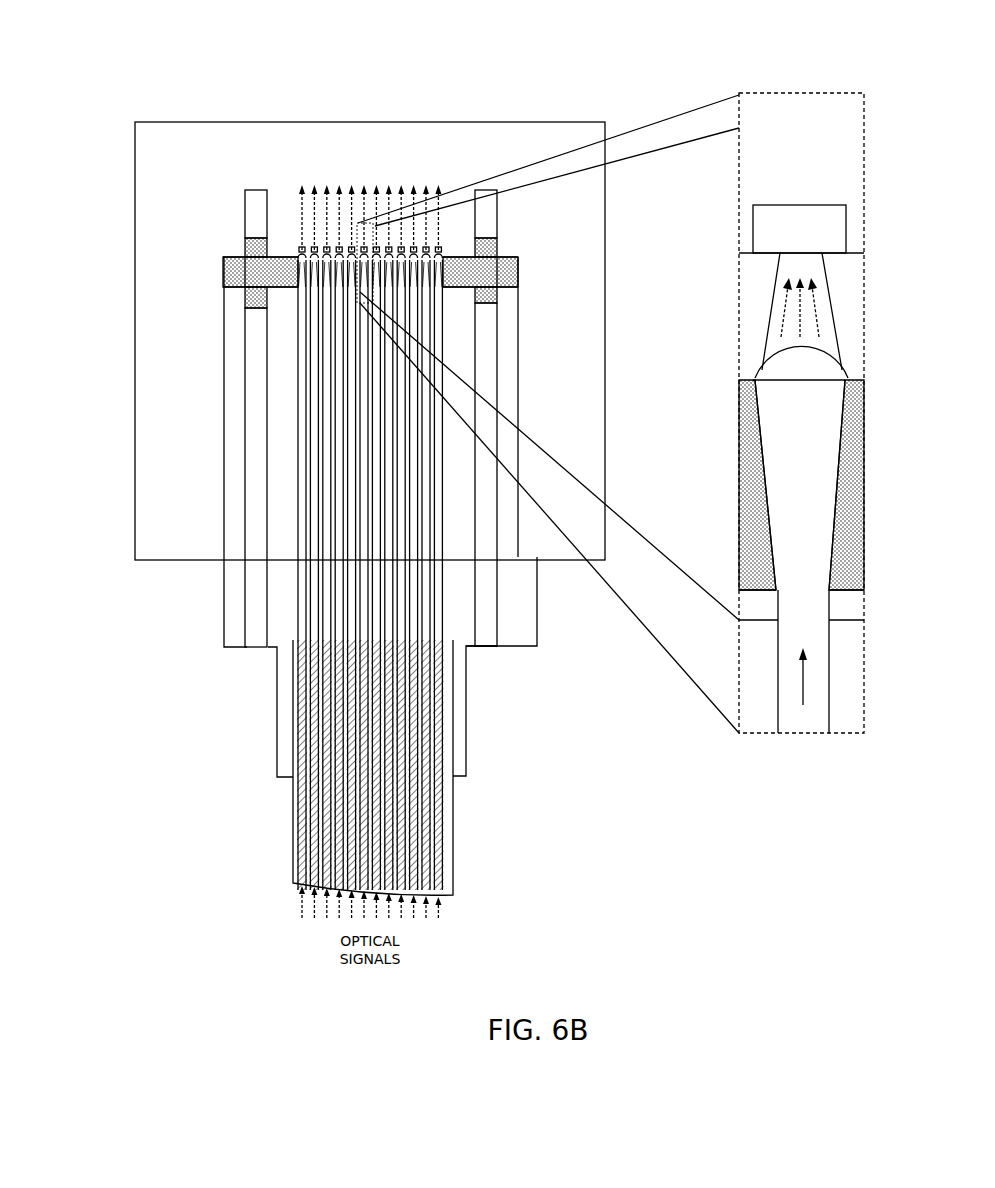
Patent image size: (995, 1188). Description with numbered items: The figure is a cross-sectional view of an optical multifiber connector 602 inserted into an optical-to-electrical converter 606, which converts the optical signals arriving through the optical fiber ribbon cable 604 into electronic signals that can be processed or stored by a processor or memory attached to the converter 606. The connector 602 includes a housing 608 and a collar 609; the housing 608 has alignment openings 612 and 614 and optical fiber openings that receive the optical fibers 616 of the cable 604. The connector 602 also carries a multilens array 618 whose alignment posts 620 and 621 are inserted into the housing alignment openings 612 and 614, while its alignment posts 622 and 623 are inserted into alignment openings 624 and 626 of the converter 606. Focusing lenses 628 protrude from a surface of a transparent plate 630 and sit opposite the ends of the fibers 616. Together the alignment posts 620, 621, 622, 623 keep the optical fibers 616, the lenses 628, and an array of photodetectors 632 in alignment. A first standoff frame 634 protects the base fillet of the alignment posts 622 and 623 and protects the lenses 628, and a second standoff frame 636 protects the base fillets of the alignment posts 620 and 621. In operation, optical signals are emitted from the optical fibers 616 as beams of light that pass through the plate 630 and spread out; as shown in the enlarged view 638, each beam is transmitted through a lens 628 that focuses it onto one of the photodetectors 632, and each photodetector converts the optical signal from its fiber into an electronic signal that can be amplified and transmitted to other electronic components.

The connector 602 is at (186, 708).
The optical fiber ribbon cable 604 is at (492, 845).
The OE converter 606 is at (158, 157).
The housing 608 is at (232, 540).
The collar 609 is at (215, 623).
The alignment opening 612 is at (257, 640).
The alignment opening 614 is at (487, 640).
The optical fibers 616 is at (327, 897).
The multilens array 618 is at (580, 228).
The alignment post 620 is at (256, 302).
The alignment post 621 is at (488, 298).
The alignment post 622 is at (252, 248).
The alignment post 623 is at (486, 246).
The alignment opening 624 is at (256, 195).
The alignment opening 626 is at (480, 190).
The focusing lenses 628 is at (312, 250).
The transparent plate 630 is at (510, 276).
The photodetectors 632 is at (428, 249).
The first standoff frame 634 is at (223, 257).
The second standoff frame 636 is at (223, 287).
The enlarged view 638 is at (805, 90).